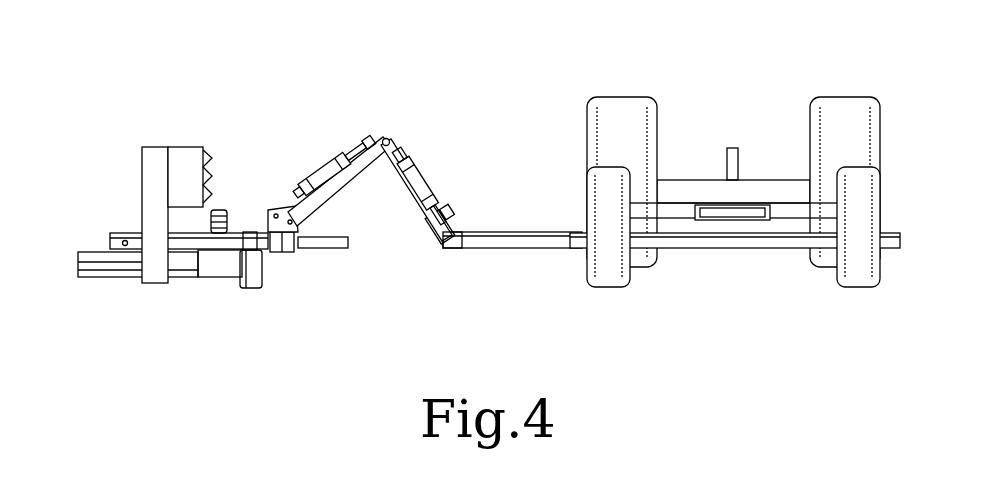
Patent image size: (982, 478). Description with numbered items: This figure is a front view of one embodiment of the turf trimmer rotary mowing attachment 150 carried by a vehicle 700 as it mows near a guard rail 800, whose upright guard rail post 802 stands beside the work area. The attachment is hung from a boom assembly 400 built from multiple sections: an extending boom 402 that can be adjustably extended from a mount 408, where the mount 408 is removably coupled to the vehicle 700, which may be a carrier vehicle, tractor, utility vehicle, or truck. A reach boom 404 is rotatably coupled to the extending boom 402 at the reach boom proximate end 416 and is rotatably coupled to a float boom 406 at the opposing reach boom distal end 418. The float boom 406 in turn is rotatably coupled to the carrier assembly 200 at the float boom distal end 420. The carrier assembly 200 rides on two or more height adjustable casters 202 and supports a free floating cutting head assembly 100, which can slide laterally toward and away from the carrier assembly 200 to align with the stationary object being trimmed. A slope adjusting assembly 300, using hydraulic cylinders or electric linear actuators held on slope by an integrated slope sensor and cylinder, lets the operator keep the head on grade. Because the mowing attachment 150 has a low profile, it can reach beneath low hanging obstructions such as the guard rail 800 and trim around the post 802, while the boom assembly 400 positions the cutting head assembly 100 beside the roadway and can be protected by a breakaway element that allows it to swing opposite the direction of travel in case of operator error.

The cutting head assembly 100 is at (122, 218).
The rotary mowing attachment 150 is at (535, 274).
The carrier assembly 200 is at (283, 263).
The height adjustable casters 202 is at (261, 289).
The slope adjusting assembly 300 is at (372, 200).
The boom assembly 400 is at (398, 194).
The extending boom 402 is at (491, 232).
The reach boom 404 is at (424, 245).
The float boom 406 is at (322, 206).
The mount 408 is at (703, 248).
The reach boom proximate end 416 is at (460, 210).
The reach boom distal end 418 is at (401, 137).
The float boom distal end 420 is at (279, 206).
The vehicle 700 is at (733, 116).
The guard rail 800 is at (208, 150).
The vertical post 802 is at (158, 146).